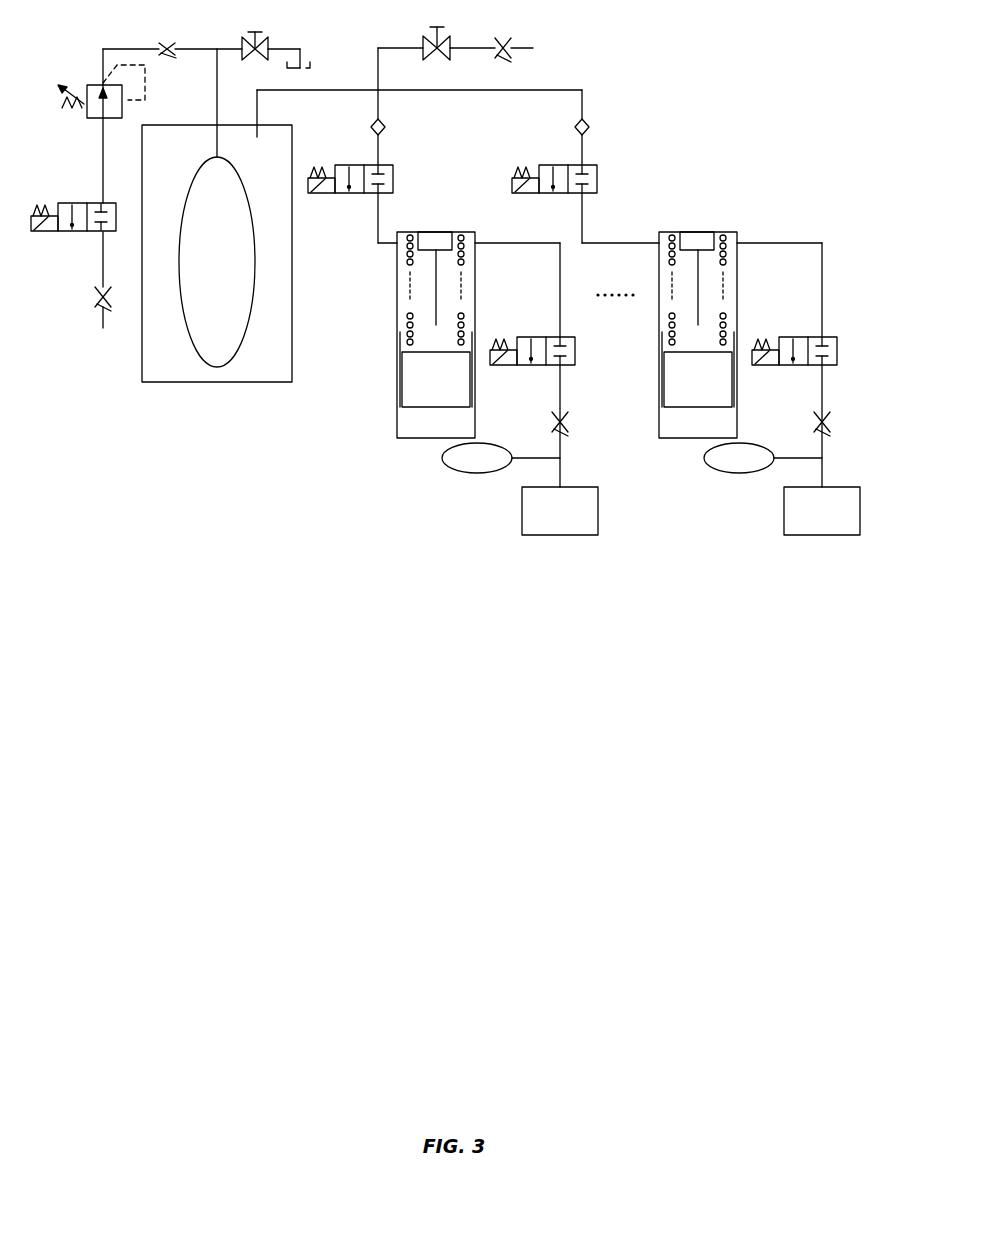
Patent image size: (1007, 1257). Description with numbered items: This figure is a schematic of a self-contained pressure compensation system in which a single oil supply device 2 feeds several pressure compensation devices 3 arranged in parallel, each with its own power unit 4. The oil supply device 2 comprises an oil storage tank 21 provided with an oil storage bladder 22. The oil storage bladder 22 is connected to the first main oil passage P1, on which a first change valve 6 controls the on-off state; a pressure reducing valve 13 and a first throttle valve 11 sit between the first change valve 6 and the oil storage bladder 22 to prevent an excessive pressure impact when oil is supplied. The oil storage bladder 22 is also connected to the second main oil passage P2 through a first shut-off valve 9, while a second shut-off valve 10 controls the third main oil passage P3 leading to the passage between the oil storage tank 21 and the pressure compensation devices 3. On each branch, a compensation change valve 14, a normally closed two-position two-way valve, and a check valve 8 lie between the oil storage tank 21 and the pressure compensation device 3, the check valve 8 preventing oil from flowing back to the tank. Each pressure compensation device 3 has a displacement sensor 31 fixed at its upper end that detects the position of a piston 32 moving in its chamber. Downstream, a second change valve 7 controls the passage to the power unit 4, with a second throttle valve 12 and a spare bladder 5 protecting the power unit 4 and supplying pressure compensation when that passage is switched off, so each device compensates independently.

The oil supply device 2 is at (230, 383).
The oil storage tank 21 is at (265, 233).
The oil storage bladder 22 is at (217, 262).
The pressure compensation device 3 is at (546, 335).
The displacement sensor 31 is at (556, 229).
The piston 32 is at (539, 369).
The power unit 4 is at (691, 511).
The spare bladder 5 is at (594, 461).
The first change valve 6 is at (73, 227).
The second change valve 7 is at (673, 351).
The check valve 8 is at (466, 128).
The first shut-off valve 9 is at (245, 41).
The second shut-off valve 10 is at (420, 43).
The first throttle valve 11 is at (170, 39).
The second throttle valve 12 is at (705, 423).
The pressure reducing valve 13 is at (101, 90).
The compensation change valve 14 is at (472, 179).
The first main oil passage P1 is at (103, 323).
The second main oil passage P2 is at (325, 51).
The third main oil passage P3 is at (531, 49).